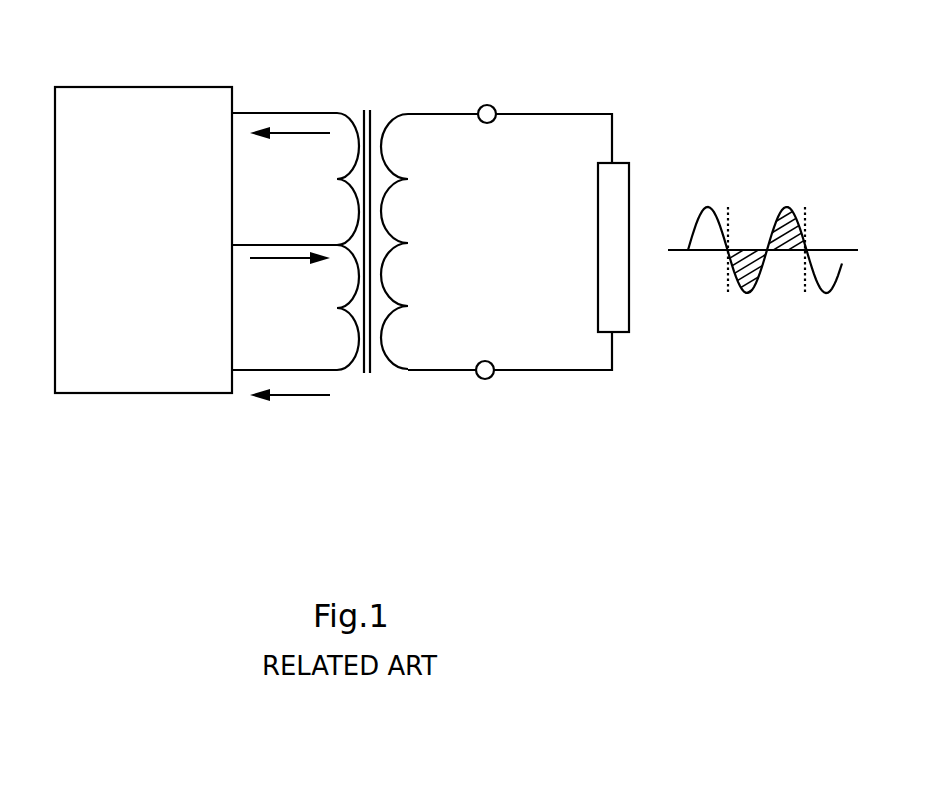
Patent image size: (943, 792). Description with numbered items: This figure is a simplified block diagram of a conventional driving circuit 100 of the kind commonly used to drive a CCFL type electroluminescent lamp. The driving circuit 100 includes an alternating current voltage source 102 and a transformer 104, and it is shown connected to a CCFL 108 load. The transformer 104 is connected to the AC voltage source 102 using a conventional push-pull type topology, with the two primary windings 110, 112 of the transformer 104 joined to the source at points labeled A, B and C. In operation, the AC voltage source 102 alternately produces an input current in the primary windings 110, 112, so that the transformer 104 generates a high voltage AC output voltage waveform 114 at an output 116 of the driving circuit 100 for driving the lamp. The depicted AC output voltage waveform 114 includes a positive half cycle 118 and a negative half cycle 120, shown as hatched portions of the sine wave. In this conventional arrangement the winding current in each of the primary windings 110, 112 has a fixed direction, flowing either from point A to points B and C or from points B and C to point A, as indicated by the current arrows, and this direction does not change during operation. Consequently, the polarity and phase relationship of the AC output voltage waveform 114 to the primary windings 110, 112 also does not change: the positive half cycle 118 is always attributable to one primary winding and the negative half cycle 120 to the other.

The driving circuit 100 is at (360, 38).
The AC voltage source 102 is at (100, 393).
The transformer 104 is at (392, 392).
The CCFL load 108 is at (600, 332).
The primary winding 110 is at (345, 181).
The primary winding 112 is at (345, 309).
The AC output voltage waveform 114 is at (748, 188).
The output 116 is at (505, 138).
The positive half cycle 118 is at (787, 207).
The negative half cycle 120 is at (745, 294).